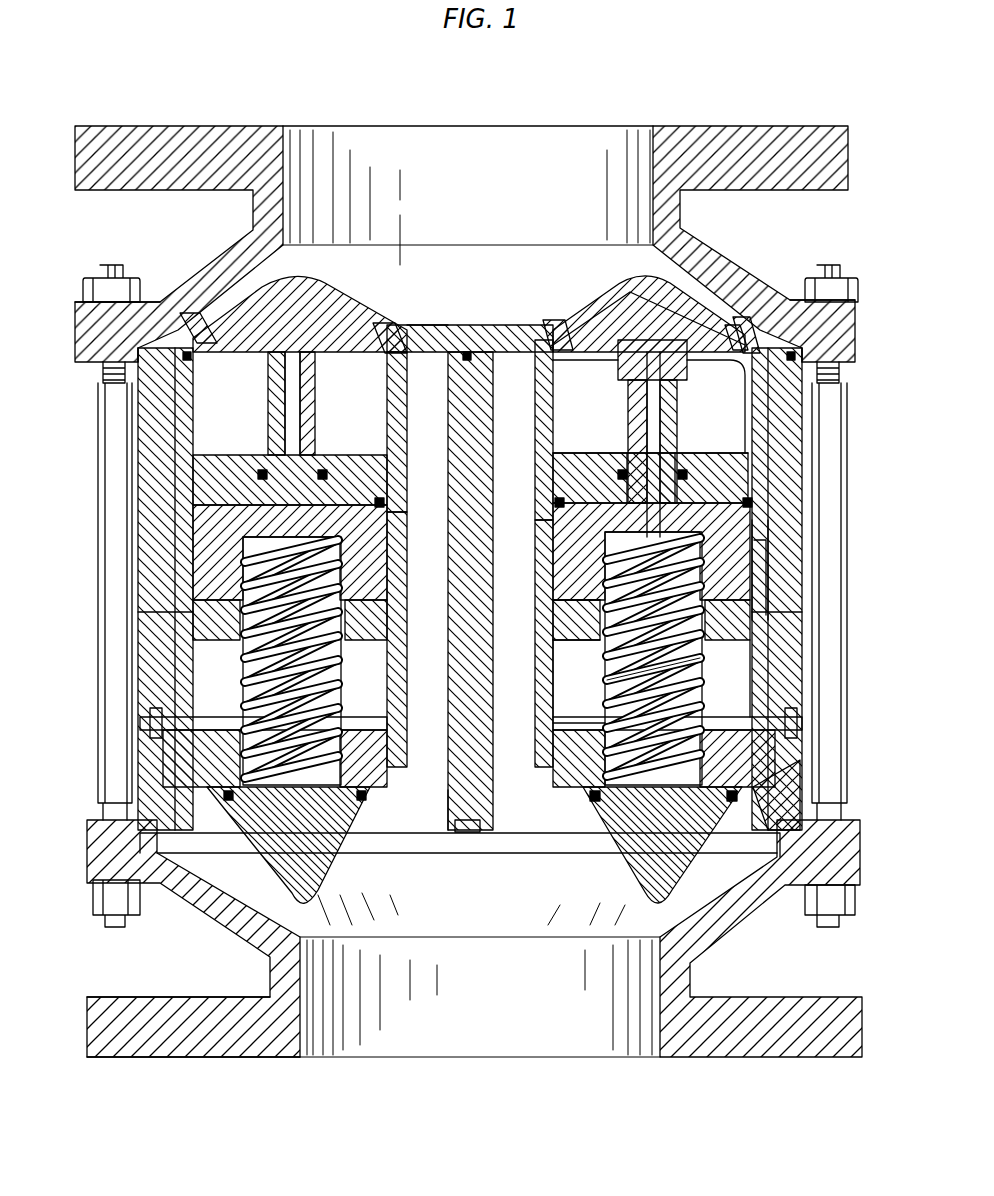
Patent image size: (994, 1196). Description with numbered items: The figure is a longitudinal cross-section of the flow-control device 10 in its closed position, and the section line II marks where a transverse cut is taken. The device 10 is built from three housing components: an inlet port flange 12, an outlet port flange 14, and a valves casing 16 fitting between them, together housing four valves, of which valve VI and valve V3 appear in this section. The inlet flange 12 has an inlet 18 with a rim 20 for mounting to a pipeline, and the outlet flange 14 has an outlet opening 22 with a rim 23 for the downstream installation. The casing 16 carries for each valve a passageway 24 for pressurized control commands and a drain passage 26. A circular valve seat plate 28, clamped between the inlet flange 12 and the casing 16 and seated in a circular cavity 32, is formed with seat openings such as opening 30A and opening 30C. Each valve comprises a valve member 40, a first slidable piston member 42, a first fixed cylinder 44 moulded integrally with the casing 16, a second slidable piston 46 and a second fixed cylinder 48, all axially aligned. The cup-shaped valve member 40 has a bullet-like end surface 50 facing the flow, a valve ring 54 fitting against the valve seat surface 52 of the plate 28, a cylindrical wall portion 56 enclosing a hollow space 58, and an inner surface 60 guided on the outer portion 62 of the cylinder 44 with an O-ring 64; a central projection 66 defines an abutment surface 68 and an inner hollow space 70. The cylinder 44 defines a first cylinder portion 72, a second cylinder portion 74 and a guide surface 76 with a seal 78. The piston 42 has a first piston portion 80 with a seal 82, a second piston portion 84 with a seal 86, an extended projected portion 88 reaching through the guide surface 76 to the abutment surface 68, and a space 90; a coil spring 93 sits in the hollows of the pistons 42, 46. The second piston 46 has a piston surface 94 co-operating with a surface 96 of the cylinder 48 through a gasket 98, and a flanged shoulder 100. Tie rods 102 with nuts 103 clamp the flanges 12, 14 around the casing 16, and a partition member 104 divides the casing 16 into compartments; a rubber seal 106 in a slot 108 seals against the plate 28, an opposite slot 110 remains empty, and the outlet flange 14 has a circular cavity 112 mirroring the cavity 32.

The flow-control device 10 is at (794, 62).
The inlet port flange 12 is at (852, 128).
The outlet port flange 14 is at (806, 1060).
The valves casing 16 is at (150, 420).
The inlet 18 is at (550, 145).
The rim 20 is at (702, 130).
The outlet opening 22 is at (408, 1050).
The rim 23 is at (262, 1050).
The passageway 24 is at (150, 727).
The drain passage 26 is at (150, 614).
The valve seat plate 28 is at (436, 340).
The opening 30A is at (550, 326).
The opening 30C is at (390, 326).
The circular cavity 32 is at (148, 330).
The valve member 40 is at (295, 300).
The first piston member 42 is at (570, 530).
The first fixed cylinder 44 is at (405, 660).
The second piston 46 is at (318, 865).
The second fixed cylinder 48 is at (560, 760).
The end surface 50 is at (600, 312).
The valve seat surface 52 is at (745, 320).
The valve ring 54 is at (735, 325).
The cylindrical wall portion 56 is at (400, 445).
The hollow space 58 is at (592, 404).
The inner surface 60 is at (548, 445).
The outer portion 62 is at (553, 470).
The O-ring 64 is at (555, 500).
The central projection 66 is at (688, 360).
The abutment surface 68 is at (680, 385).
The inner hollow space 70 is at (618, 365).
The first cylinder portion 72 is at (556, 707).
The second cylinder portion 74 is at (755, 560).
The cylindrical guide surface 76 is at (680, 455).
The seal 78 is at (622, 455).
The first piston portion 80 is at (553, 612).
The seal 82 is at (553, 650).
The second piston portion 84 is at (553, 580).
The seal 86 is at (760, 530).
The extended projected portion 88 is at (662, 412).
The space 90 is at (700, 635).
The coil spring 93 is at (702, 685).
The piston surface 94 is at (735, 775).
The surface 96 is at (585, 797).
The gasket 98 is at (730, 800).
The flanged shoulder 100 is at (553, 727).
The tie rods 102 is at (110, 518).
The nuts 103 is at (858, 285).
The partition member 104 is at (450, 793).
The rubber seal 106 is at (138, 365).
The slot 108 is at (456, 357).
The slot 110 is at (472, 835).
The circular cavity 112 is at (420, 850).
The section line II is at (52, 340).
The valve V3 is at (412, 232).
The valve VI is at (536, 232).